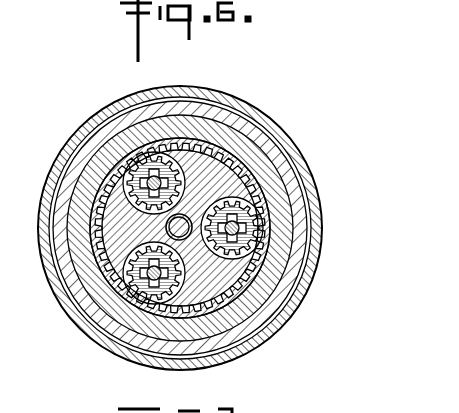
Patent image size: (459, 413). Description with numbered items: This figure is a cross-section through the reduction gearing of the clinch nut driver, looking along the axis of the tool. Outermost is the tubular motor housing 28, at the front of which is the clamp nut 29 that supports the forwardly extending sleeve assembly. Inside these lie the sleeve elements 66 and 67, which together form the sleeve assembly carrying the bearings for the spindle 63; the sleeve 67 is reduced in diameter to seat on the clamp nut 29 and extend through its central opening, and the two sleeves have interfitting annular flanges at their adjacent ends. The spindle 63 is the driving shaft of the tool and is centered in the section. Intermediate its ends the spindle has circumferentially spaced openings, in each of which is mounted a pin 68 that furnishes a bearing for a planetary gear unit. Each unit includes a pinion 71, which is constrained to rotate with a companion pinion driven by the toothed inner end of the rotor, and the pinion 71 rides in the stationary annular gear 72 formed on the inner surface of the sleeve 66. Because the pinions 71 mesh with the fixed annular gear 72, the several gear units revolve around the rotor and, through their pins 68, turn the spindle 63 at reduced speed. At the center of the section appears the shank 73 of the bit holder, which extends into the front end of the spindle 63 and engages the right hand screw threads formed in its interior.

The tubular motor housing 28 is at (239, 101).
The clamp nut 29 is at (98, 117).
The spindle 63 is at (112, 232).
The sleeve 66 is at (112, 178).
The sleeve 67 is at (250, 143).
The pin 68 is at (186, 227).
The pinion 71 is at (156, 178).
The stationary annular gear 72 is at (262, 269).
The shank 73 is at (179, 227).